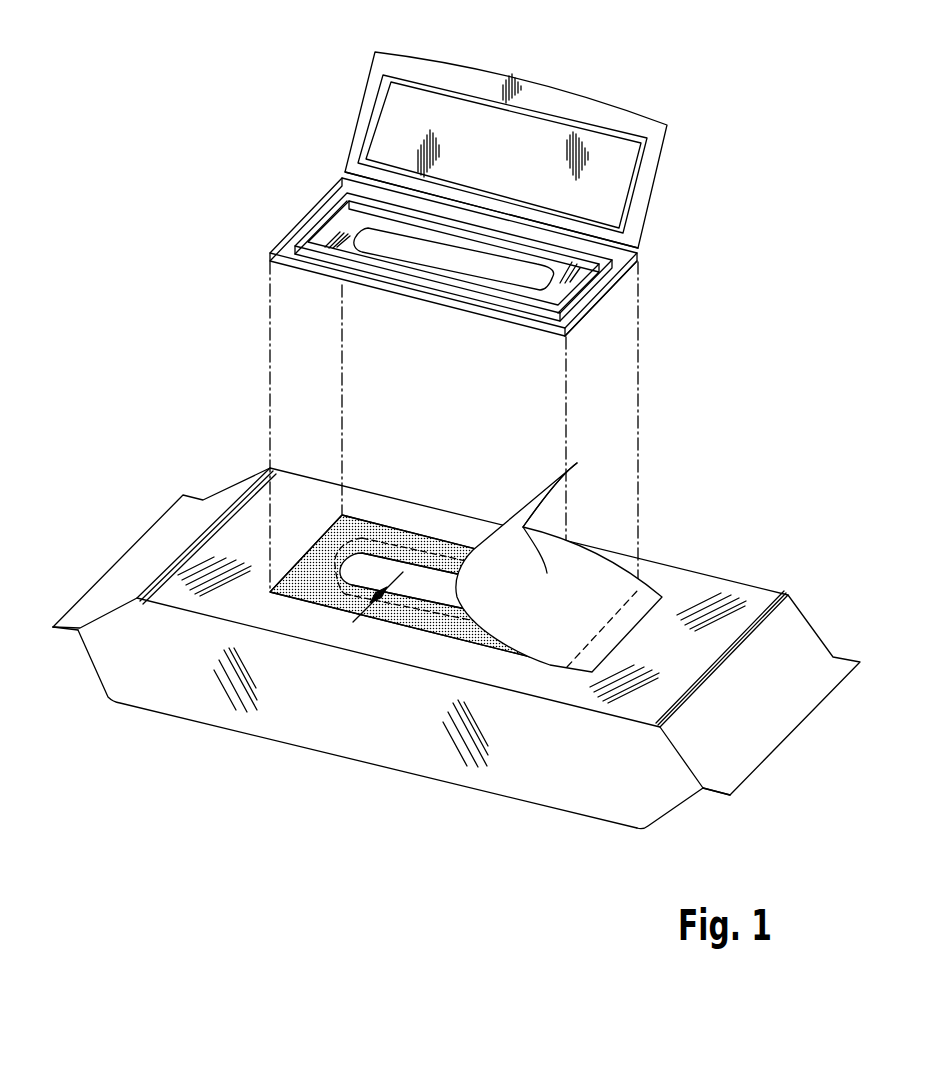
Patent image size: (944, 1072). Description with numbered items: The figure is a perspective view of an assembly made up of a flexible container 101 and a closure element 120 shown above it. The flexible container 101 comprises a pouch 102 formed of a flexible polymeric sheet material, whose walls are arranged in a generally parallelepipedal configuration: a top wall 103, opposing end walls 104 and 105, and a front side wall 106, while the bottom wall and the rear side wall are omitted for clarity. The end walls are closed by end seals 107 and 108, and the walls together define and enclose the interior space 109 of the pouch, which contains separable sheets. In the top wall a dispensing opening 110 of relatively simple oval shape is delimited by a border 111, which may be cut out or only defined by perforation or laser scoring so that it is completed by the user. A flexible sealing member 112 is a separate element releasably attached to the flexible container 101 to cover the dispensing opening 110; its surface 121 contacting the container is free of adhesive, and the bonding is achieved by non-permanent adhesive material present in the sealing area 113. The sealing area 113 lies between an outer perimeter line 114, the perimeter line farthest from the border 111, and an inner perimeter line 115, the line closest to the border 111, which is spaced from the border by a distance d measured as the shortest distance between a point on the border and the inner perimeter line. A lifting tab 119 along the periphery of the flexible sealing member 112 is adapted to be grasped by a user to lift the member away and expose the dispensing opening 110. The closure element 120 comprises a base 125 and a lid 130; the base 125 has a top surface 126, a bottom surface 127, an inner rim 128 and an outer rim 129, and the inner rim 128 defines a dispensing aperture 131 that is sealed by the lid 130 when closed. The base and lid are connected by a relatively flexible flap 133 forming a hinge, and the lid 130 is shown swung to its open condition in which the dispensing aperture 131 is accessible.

The flexible container 101 is at (456, 613).
The pouch 102 is at (142, 712).
The top wall 103 is at (756, 600).
The end wall 104 is at (158, 562).
The end wall 105 is at (798, 627).
The front side wall 106 is at (363, 737).
The end seal 107 is at (100, 593).
The end seal 108 is at (790, 718).
The interior space 109 is at (572, 757).
The dispensing opening 110 is at (436, 565).
The border 111 is at (392, 552).
The flexible sealing member 112 is at (573, 548).
The sealing area 113 is at (368, 530).
The outer perimeter line 114 is at (300, 598).
The inner perimeter line 115 is at (433, 575).
The lifting tab 119 is at (548, 493).
The closure element 120 is at (484, 180).
The surface 121 is at (521, 512).
The base 125 is at (615, 278).
The top surface 126 is at (346, 224).
The bottom surface 127 is at (313, 273).
The inner rim 128 is at (453, 242).
The outer rim 129 is at (578, 318).
The lid 130 is at (548, 131).
The dispensing aperture 131 is at (420, 243).
The flexible flap 133 is at (620, 243).
The distance d is at (399, 605).